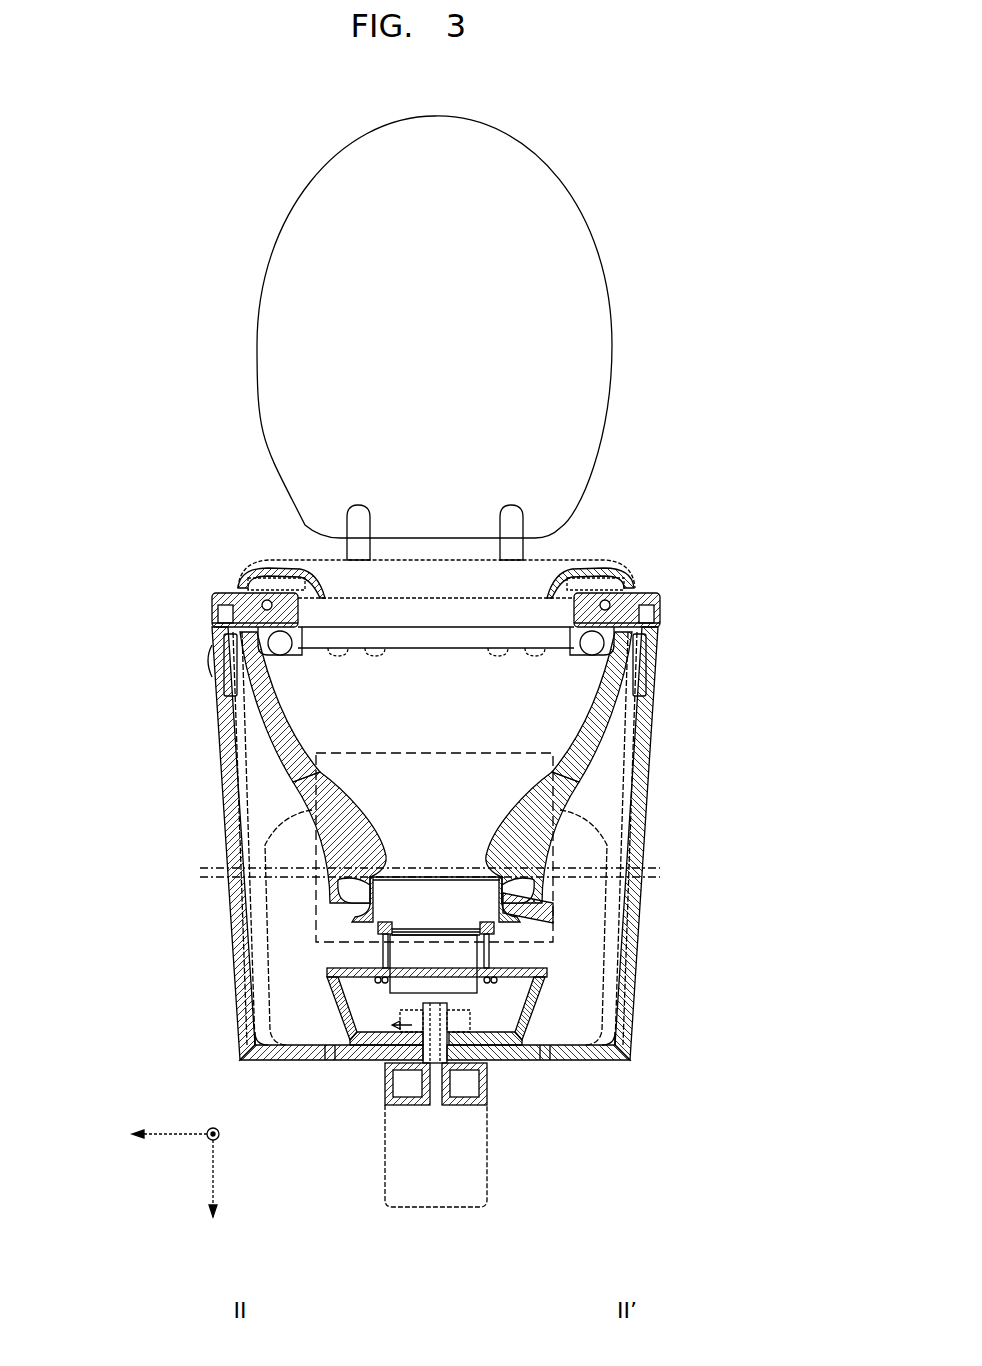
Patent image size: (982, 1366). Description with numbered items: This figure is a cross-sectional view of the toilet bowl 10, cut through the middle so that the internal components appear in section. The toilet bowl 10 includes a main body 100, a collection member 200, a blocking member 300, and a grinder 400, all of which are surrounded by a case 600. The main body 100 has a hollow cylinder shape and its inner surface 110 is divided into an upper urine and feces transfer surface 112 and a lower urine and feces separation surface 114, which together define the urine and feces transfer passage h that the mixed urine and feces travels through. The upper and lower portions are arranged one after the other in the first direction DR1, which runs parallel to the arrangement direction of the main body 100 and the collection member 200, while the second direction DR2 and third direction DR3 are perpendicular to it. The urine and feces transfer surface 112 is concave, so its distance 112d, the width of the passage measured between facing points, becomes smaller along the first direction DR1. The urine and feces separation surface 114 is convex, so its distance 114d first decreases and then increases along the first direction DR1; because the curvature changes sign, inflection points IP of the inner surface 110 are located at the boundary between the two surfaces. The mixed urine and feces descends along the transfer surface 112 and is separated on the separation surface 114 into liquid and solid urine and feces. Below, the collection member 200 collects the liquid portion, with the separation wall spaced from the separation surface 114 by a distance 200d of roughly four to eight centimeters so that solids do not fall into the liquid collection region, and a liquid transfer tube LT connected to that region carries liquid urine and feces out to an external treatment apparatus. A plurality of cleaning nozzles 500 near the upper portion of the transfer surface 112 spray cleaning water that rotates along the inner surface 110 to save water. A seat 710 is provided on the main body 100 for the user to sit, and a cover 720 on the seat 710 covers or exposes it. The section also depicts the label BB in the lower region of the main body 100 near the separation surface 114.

The toilet bowl 10 is at (731, 146).
The main body 100 is at (514, 838).
The inner surface 110 is at (514, 767).
The urine and feces transfer surface 112 is at (595, 700).
The urine and feces separation surface 114 is at (560, 790).
The collection member 200 is at (535, 917).
The blocking member 300 is at (485, 968).
The grinder 400 is at (455, 1048).
The cleaning nozzles 500 is at (598, 645).
The case 600 is at (640, 787).
The seat 710 is at (592, 570).
The cover 720 is at (608, 330).
The inflection points IP is at (343, 793).
The bottom boundary BB is at (553, 857).
The liquid transfer tube LT is at (567, 882).
The distance of the urine and feces transfer surface 112d is at (288, 712).
The distance of the urine and feces separation surface 114d is at (490, 833).
The distance between the separation wall and the urine and feces separation surface 200d is at (203, 843).
The urine and feces transfer passage h is at (429, 868).
The first direction DR1 is at (213, 1193).
The second direction DR2 is at (228, 1120).
The third direction DR3 is at (143, 1136).